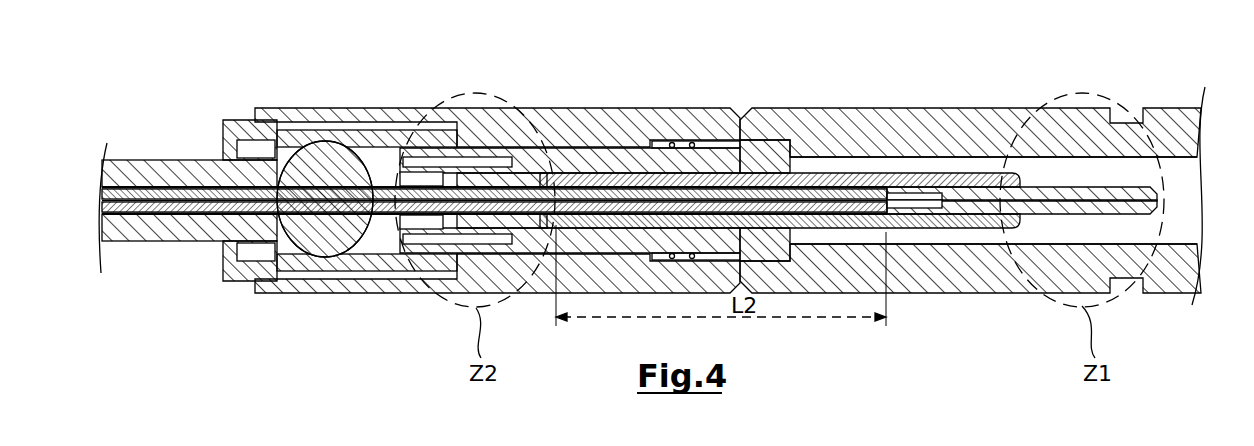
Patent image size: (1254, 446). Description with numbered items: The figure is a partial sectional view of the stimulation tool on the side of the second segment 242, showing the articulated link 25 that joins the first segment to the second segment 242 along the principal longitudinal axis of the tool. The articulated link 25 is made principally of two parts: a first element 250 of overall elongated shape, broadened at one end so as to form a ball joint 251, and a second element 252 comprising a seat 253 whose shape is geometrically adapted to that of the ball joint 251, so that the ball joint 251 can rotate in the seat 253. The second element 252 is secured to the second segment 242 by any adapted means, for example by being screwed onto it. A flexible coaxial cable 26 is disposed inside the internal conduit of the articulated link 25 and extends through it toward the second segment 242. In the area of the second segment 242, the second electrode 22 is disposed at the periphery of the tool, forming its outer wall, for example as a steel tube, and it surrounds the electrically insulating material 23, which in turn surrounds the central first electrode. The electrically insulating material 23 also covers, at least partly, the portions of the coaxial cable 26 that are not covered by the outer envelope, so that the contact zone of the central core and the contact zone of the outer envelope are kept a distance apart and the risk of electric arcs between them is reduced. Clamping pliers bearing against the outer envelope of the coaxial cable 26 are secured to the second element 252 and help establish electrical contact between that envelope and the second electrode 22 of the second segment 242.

The second electrode 22 is at (980, 118).
The electrically insulating material 23 is at (829, 173).
The articulated link 25 is at (651, 104).
The flexible coaxial cable 26 is at (207, 215).
The second segment 242 is at (900, 118).
The first element 250 is at (148, 160).
The ball joint 251 is at (281, 120).
The second element 252 is at (569, 108).
The seat 253 is at (321, 152).